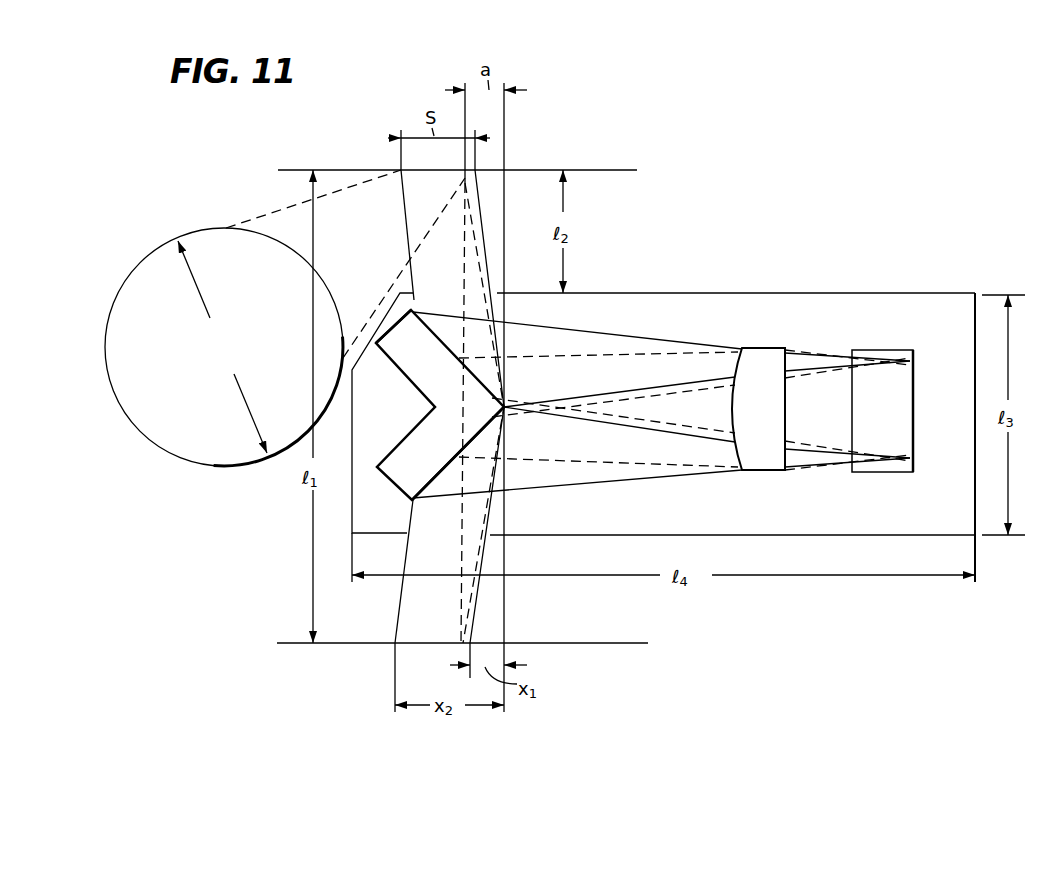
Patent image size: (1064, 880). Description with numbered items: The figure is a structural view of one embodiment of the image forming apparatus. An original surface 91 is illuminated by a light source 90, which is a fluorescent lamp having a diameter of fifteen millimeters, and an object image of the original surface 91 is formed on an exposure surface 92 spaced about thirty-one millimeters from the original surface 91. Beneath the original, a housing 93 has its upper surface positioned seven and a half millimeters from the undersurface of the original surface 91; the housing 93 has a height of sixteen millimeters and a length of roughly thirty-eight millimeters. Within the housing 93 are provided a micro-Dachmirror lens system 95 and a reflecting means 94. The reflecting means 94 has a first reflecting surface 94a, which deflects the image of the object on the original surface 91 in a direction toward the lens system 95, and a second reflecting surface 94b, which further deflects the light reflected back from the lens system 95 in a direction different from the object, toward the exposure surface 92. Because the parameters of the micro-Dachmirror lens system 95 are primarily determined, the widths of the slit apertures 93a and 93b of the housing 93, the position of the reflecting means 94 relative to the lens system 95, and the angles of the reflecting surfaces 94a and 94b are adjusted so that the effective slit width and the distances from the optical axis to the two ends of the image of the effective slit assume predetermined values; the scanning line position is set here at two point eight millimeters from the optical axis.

The light source 90 is at (147, 262).
The original surface 91 is at (600, 152).
The exposure surface 92 is at (333, 644).
The housing 93 is at (902, 293).
The slit aperture 93a is at (430, 290).
The slit aperture 93b is at (421, 541).
The reflecting means 94 is at (410, 437).
The first reflecting surface 94a is at (393, 348).
The second reflecting surface 94b is at (478, 424).
The micro-Dachmirror lens system 95 is at (815, 474).